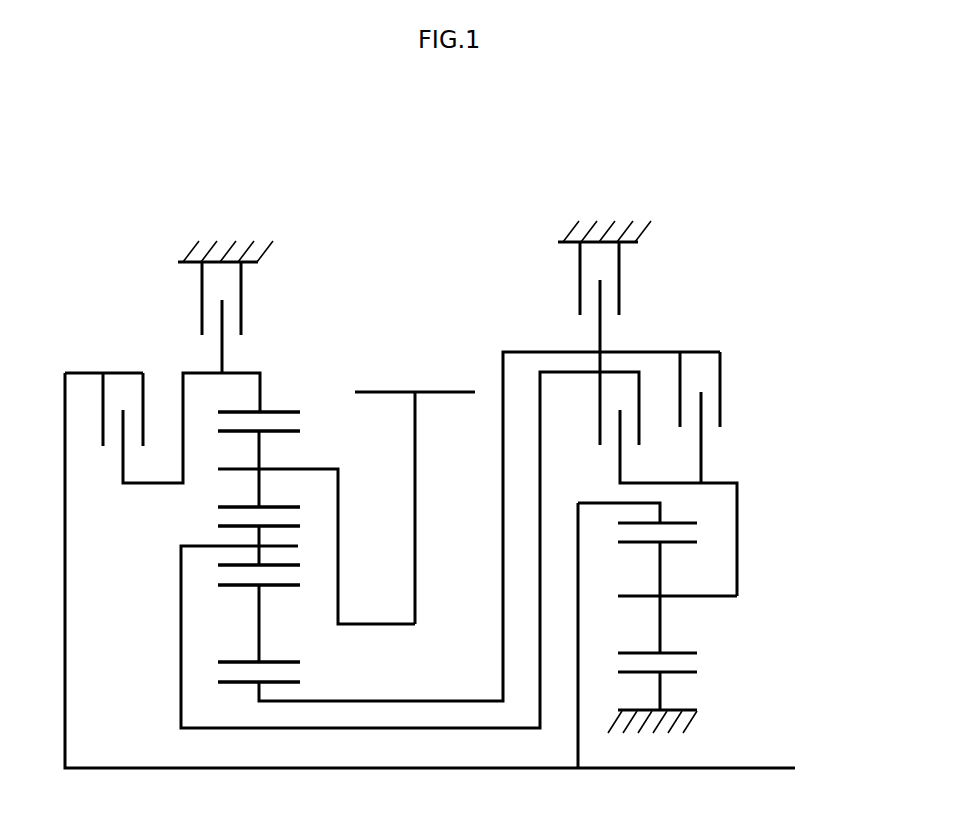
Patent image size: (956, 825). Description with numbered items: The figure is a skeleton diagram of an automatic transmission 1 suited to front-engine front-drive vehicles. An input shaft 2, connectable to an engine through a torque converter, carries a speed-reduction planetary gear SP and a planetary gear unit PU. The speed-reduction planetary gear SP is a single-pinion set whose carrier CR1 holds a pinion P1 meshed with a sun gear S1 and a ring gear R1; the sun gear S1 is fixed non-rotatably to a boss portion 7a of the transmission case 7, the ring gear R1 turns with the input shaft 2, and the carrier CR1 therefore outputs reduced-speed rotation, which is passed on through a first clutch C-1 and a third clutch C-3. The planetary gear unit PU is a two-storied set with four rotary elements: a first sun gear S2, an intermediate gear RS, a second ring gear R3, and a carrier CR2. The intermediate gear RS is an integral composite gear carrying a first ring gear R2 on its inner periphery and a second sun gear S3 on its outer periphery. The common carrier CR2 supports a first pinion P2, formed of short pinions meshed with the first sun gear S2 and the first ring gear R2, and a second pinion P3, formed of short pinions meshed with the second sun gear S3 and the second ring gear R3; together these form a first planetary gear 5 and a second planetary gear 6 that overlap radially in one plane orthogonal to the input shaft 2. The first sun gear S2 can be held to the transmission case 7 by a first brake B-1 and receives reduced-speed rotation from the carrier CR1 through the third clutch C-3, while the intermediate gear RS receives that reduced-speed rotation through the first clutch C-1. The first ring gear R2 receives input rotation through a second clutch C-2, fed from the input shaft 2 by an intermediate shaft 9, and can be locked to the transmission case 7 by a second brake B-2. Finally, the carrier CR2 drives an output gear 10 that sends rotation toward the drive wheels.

The automatic transmission 1 is at (410, 220).
The input shaft 2 is at (780, 768).
The first planetary gear 5 is at (365, 550).
The second planetary gear 6 is at (376, 452).
The transmission case 7 is at (382, 281).
The boss portion 7a is at (680, 728).
The intermediate shaft 9 is at (160, 766).
The output gear 10 is at (448, 388).
The first brake B-1 is at (604, 252).
The second brake B-2 is at (225, 293).
The first clutch C-1 is at (642, 438).
The second clutch C-2 is at (162, 412).
The third clutch C-3 is at (700, 403).
The planetary gear unit PU is at (298, 324).
The speed-reduction planetary gear SP is at (672, 282).
The intermediate gear RS is at (180, 570).
The ring gear R1 is at (683, 518).
The pinion P1 is at (684, 544).
The carrier CR1 is at (718, 600).
The sun gear S1 is at (697, 665).
The first ring gear R2 is at (293, 565).
The first pinion P2 is at (293, 585).
The first sun gear S2 is at (292, 680).
The carrier CR2 is at (341, 503).
The second ring gear R3 is at (286, 410).
The second pinion P3 is at (286, 434).
The second sun gear S3 is at (292, 525).